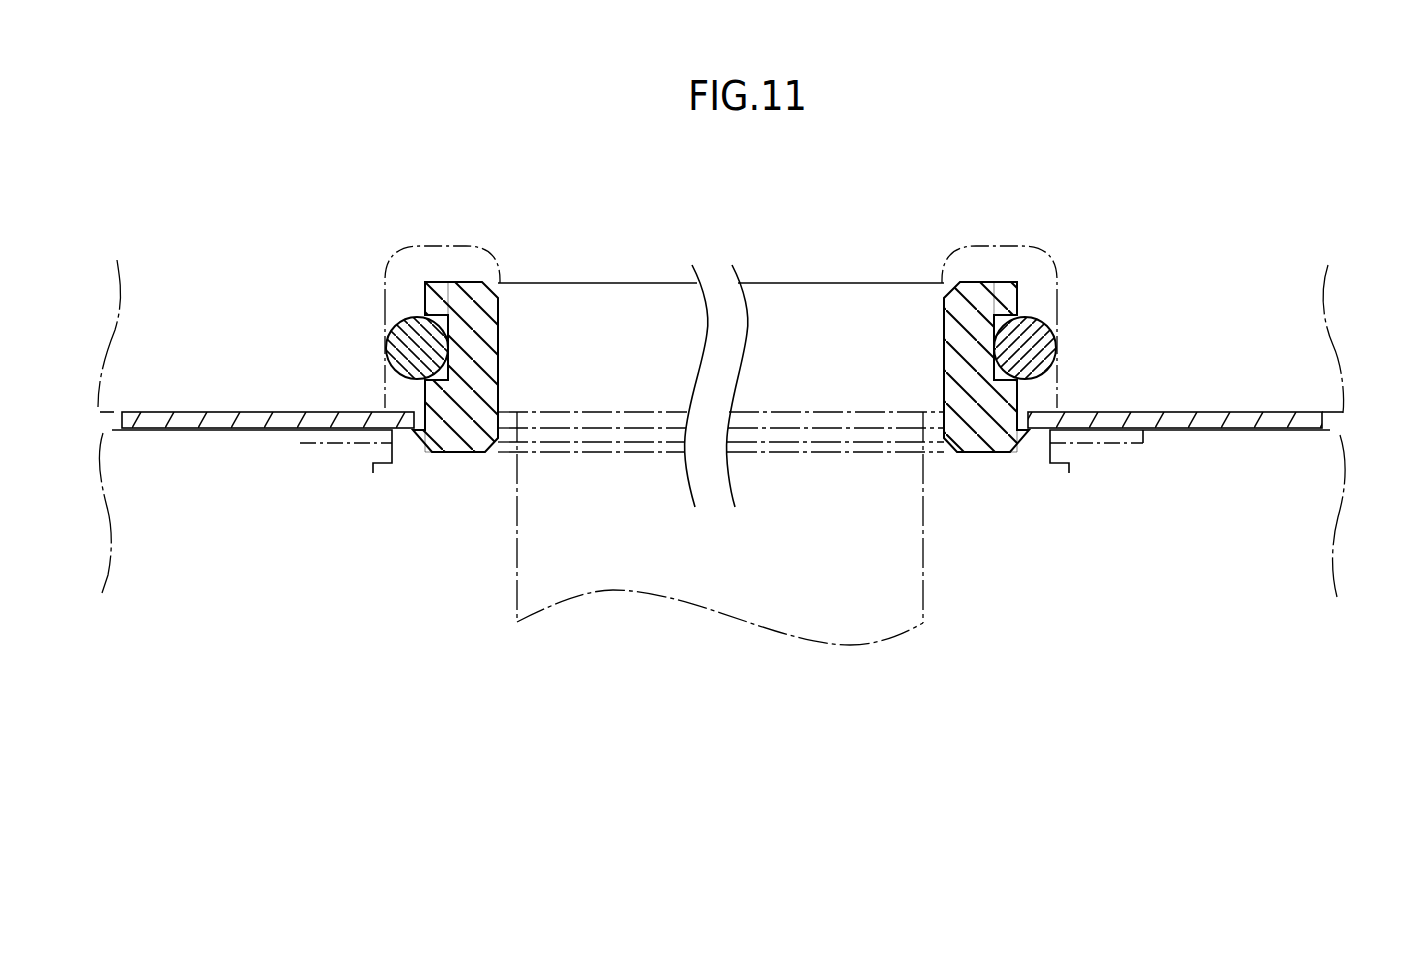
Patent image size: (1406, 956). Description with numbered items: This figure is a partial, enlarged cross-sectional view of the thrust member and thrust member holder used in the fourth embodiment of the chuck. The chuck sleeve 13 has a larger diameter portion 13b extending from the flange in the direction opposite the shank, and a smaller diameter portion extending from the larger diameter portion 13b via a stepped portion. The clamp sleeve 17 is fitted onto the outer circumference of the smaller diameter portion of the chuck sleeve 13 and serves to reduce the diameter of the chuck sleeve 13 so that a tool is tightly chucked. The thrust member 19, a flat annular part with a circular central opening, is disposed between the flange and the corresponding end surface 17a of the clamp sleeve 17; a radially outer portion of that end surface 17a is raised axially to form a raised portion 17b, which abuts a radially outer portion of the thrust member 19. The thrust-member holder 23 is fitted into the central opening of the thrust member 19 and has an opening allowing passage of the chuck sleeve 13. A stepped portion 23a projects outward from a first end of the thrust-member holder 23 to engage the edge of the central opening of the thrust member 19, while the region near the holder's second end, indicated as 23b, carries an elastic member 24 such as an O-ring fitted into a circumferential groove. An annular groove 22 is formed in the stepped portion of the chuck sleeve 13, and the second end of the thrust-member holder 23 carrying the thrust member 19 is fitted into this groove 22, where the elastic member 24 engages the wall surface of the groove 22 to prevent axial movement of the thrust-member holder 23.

The chuck sleeve 13 is at (900, 593).
The larger diameter portion 13b is at (1307, 330).
The clamp sleeve 17 is at (1307, 525).
The end surface of the clamp sleeve 17a is at (1103, 447).
The raised portion 17b is at (1250, 432).
The thrust member 19 is at (235, 420).
The annular groove 22 is at (392, 265).
The thrust-member holder 23 is at (460, 413).
The stepped portion 23a is at (418, 442).
The seal projecting portion 23b is at (437, 307).
The elastic member 24 is at (392, 340).